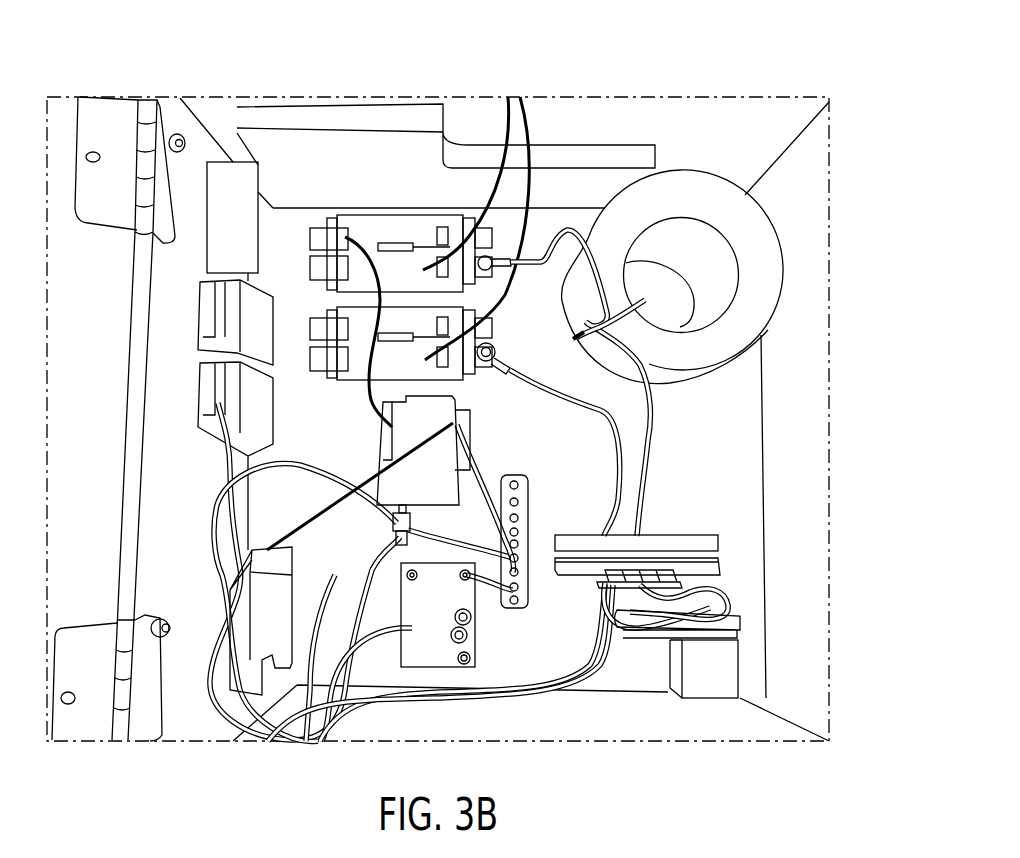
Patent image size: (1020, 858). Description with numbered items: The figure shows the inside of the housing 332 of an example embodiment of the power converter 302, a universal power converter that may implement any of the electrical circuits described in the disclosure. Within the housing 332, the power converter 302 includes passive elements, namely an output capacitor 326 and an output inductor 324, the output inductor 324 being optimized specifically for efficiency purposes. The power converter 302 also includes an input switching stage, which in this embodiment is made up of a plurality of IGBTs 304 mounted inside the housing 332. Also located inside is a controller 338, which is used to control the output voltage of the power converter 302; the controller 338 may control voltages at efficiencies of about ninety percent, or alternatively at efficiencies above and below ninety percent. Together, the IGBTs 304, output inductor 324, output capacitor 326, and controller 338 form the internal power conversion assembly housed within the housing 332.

The power converter 302 is at (250, 48).
The IGBTs 304 is at (520, 97).
The output inductor 324 is at (708, 197).
The output capacitor 326 is at (717, 682).
The housing 332 is at (85, 727).
The controller 338 is at (402, 480).